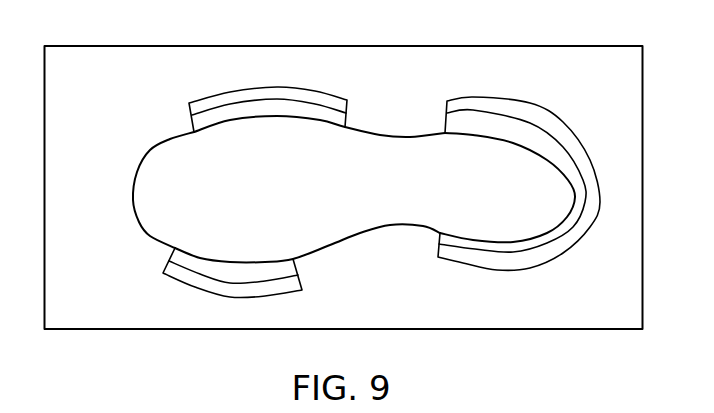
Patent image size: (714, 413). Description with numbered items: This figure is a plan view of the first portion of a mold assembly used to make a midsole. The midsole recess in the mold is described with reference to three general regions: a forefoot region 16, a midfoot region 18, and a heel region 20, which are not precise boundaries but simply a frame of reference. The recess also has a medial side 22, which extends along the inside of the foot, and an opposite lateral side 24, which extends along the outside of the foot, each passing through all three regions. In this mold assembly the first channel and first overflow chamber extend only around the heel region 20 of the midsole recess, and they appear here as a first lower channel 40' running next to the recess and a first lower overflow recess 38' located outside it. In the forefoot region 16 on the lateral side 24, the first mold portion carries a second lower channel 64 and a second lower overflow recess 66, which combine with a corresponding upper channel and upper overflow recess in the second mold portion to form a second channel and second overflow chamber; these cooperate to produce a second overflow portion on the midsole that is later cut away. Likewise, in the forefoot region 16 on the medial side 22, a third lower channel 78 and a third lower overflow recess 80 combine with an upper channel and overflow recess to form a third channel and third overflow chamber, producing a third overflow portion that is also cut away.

The forefoot region 16 is at (197, 201).
The midfoot region 18 is at (310, 182).
The heel region 20 is at (545, 198).
The medial side 22 is at (330, 245).
The lateral side 24 is at (381, 130).
The first lower overflow recess 38' is at (519, 202).
The first lower channel 40' is at (521, 196).
The second lower channel 64 is at (191, 127).
The second lower overflow recess 66 is at (201, 102).
The third lower channel 78 is at (182, 257).
The third lower overflow recess 80 is at (180, 272).